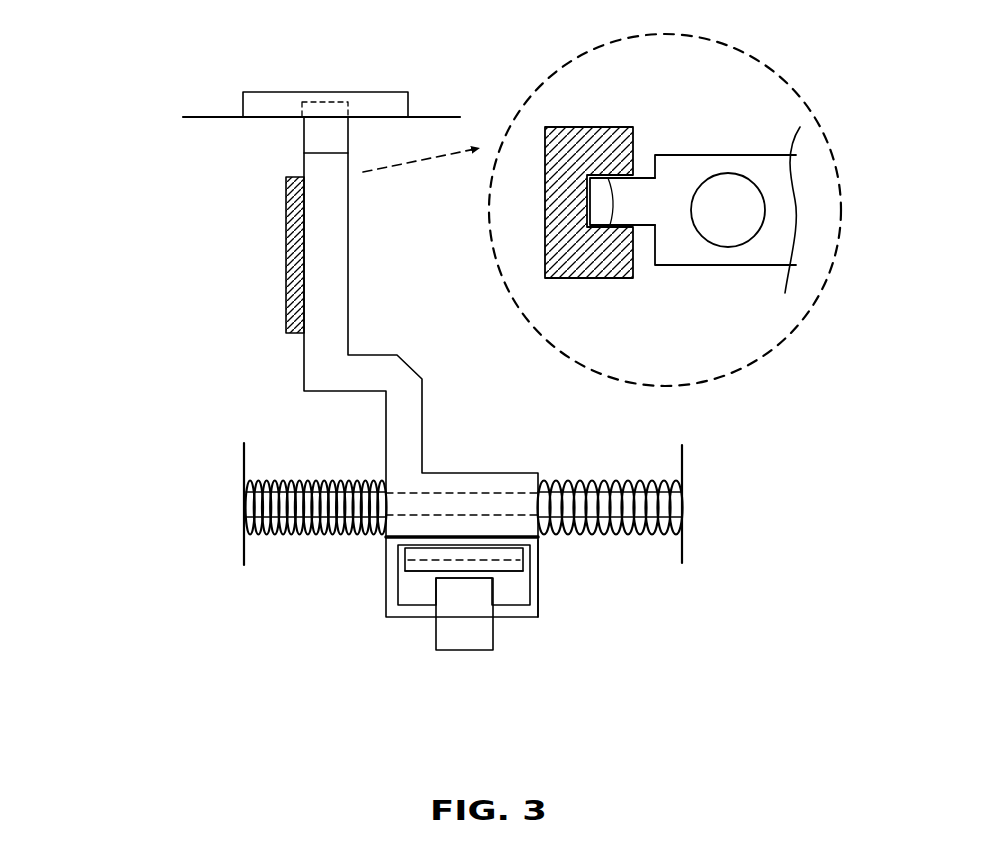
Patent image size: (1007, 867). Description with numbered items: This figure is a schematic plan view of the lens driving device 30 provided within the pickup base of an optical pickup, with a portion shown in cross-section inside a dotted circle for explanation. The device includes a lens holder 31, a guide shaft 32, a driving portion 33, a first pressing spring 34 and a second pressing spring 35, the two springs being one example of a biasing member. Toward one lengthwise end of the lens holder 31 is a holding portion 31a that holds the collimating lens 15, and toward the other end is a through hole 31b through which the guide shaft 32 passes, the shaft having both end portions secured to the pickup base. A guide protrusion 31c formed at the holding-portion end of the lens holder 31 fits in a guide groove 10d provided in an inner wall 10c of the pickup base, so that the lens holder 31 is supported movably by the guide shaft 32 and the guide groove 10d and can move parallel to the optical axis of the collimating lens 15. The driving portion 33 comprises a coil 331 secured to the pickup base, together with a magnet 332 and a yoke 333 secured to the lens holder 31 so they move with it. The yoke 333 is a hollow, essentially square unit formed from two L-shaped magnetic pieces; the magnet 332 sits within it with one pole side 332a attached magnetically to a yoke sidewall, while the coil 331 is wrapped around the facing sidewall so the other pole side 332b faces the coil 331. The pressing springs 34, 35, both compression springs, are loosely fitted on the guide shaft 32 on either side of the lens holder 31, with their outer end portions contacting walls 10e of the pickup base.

The lens driving device 30 is at (167, 198).
The inner wall 10c is at (210, 108).
The guide groove 10d is at (392, 95).
The lens holder 31 is at (340, 288).
The holding portion 31a is at (735, 235).
The through hole 31b is at (455, 493).
The guide protrusion 31c is at (308, 147).
The collimating lens 15 is at (286, 233).
The guide shaft 32 is at (582, 500).
The walls 10e is at (243, 455).
The driving portion 33 is at (387, 628).
The coil 331 is at (472, 638).
The magnet 332 is at (407, 572).
The one pole side 332a is at (533, 555).
The other pole side 332b is at (515, 567).
The yoke 333 is at (517, 615).
The first pressing spring 34 is at (335, 532).
The second pressing spring 35 is at (602, 532).